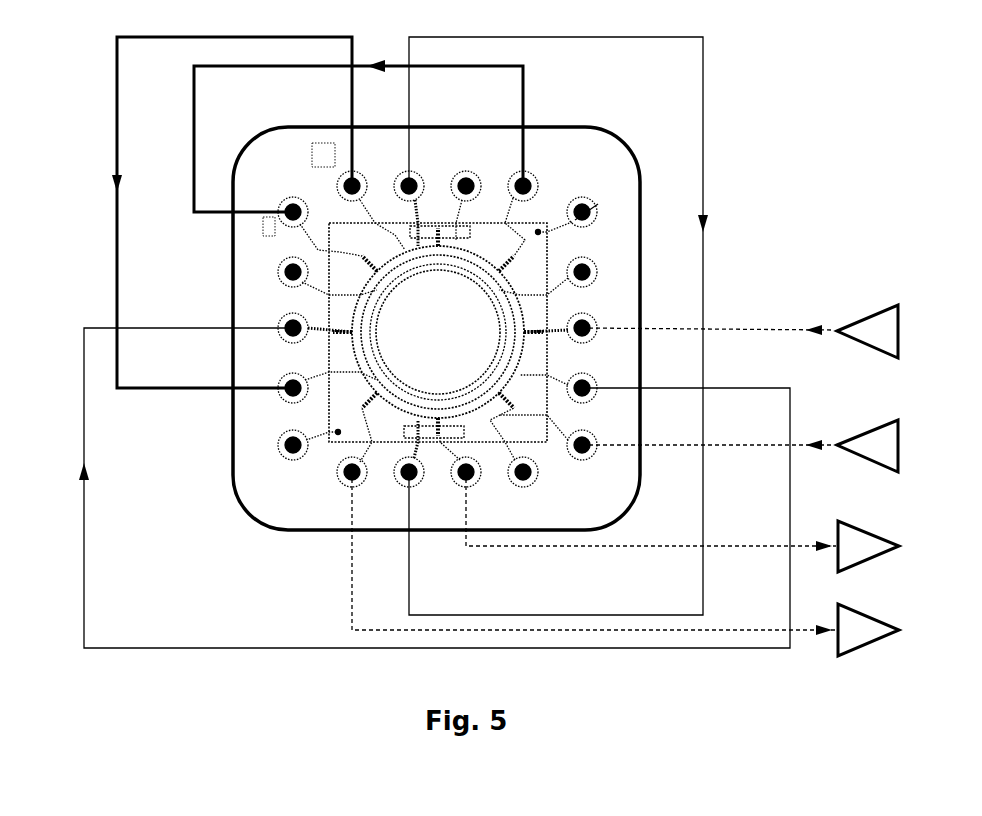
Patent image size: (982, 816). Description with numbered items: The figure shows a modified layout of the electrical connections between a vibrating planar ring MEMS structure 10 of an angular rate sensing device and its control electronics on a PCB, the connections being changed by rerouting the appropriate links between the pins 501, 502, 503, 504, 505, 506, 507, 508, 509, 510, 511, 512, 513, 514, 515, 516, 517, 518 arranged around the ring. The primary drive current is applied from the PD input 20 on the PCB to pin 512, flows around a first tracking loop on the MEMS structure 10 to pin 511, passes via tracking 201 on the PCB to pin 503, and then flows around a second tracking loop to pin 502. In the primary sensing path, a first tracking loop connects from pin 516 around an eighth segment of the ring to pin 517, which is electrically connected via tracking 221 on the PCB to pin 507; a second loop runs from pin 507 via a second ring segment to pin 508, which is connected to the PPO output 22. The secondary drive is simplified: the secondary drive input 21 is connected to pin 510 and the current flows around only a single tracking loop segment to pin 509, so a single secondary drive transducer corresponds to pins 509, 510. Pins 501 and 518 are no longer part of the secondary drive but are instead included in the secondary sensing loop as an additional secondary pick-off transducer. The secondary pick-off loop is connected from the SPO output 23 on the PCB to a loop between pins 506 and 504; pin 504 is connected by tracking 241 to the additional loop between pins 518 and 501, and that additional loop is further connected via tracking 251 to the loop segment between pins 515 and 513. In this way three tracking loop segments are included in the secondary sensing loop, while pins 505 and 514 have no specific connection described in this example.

The MEMS structure 10 is at (538, 218).
The PD input 20 is at (764, 331).
The secondary drive input 21 is at (764, 446).
The PPO output 22 is at (714, 522).
The SPO output 23 is at (657, 564).
The tracking 201 is at (415, 488).
The tracking 221 is at (577, 326).
The tracking 241 is at (215, 212).
The tracking 251 is at (377, 136).
The pin 501 is at (304, 224).
The pin 502 is at (311, 275).
The pin 503 is at (299, 327).
The pin 504 is at (313, 392).
The pin 505 is at (309, 455).
The pin 506 is at (362, 456).
The pin 507 is at (418, 461).
The pin 508 is at (472, 469).
The pin 509 is at (528, 450).
The pin 510 is at (558, 445).
The pin 511 is at (568, 395).
The pin 512 is at (570, 336).
The pin 513 is at (562, 277).
The pin 514 is at (580, 218).
The pin 515 is at (535, 209).
The pin 516 is at (463, 197).
The pin 517 is at (398, 200).
The pin 518 is at (356, 200).